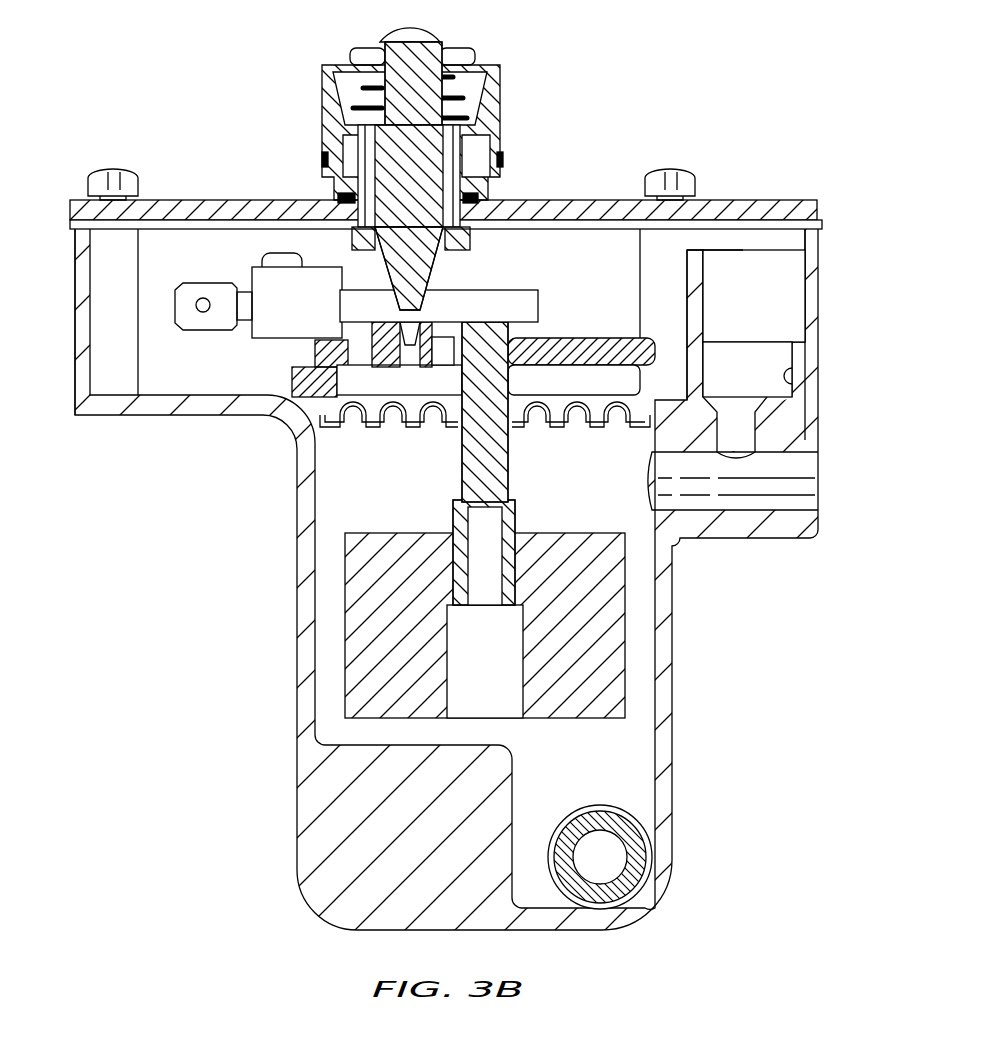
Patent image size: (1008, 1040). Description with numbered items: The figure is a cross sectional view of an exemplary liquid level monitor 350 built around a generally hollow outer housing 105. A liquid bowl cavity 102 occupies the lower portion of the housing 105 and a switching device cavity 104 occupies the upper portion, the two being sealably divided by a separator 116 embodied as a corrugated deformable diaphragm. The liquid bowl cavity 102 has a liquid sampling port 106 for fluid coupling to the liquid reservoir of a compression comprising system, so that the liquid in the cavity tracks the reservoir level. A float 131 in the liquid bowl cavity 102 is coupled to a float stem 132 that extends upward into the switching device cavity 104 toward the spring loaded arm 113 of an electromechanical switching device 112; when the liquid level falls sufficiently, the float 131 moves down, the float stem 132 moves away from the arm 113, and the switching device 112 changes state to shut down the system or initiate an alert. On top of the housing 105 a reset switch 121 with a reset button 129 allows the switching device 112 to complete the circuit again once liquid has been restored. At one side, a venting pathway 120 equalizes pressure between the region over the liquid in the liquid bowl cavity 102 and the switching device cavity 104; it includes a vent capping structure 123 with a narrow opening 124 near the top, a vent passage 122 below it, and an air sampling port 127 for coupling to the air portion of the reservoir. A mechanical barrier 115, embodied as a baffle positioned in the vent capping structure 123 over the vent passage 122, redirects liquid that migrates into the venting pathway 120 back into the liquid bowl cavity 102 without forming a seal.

The liquid bowl cavity 102 is at (605, 761).
The switching device cavity 104 is at (518, 250).
The outer housing 105 is at (446, 579).
The liquid sampling port 106 is at (600, 857).
The electromechanical switching device 112 is at (272, 285).
The arm 113 is at (498, 300).
The mechanical barrier 115 is at (757, 340).
The separator 116 is at (415, 425).
The venting pathway 120 is at (762, 272).
The reset switch 121 is at (333, 113).
The vent passage 122 is at (735, 425).
The vent capping structure 123 is at (818, 292).
The opening 124 is at (697, 238).
The air sampling port 127 is at (812, 478).
The reset button 129 is at (413, 27).
The float 131 is at (620, 641).
The float stem 132 is at (455, 470).
The liquid level monitor 350 is at (222, 751).